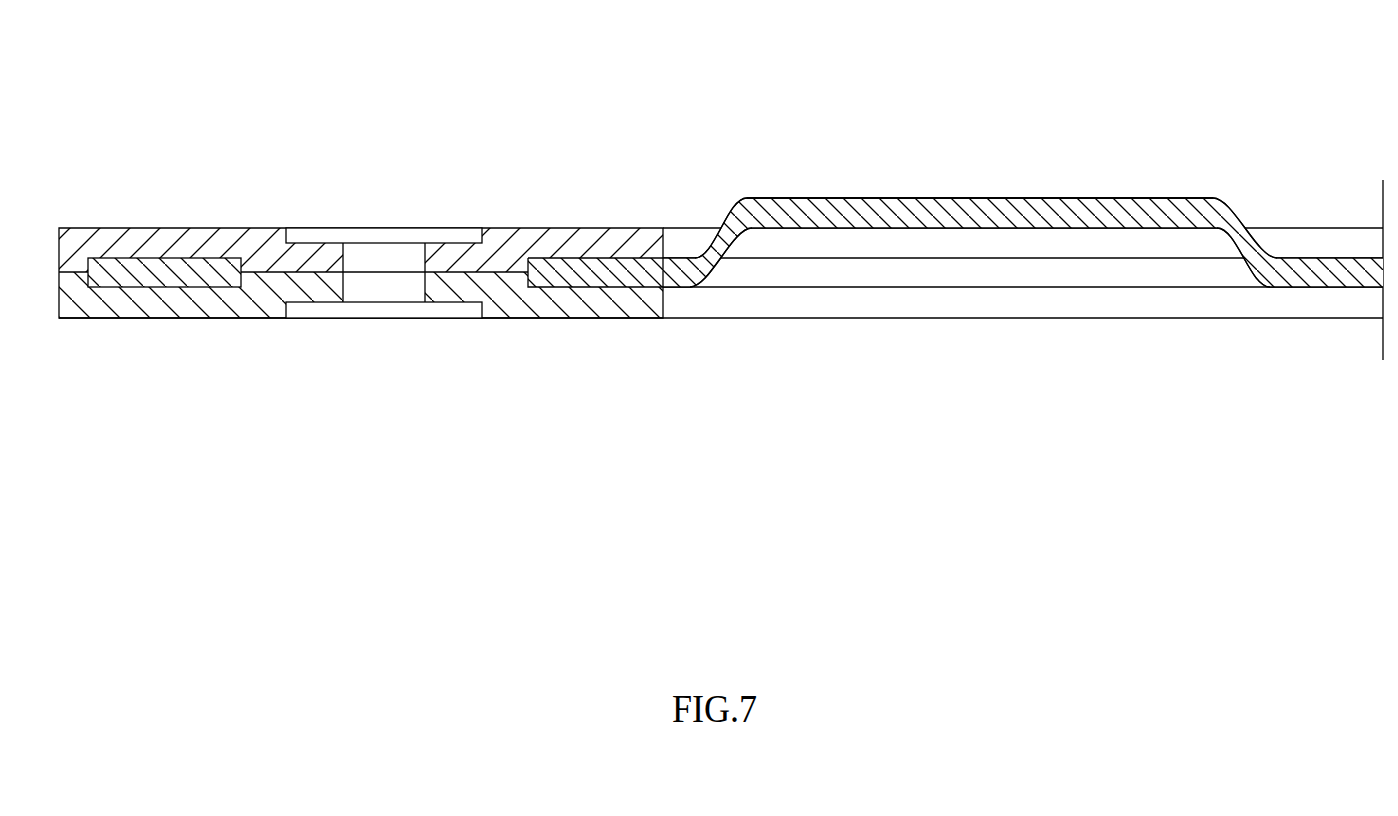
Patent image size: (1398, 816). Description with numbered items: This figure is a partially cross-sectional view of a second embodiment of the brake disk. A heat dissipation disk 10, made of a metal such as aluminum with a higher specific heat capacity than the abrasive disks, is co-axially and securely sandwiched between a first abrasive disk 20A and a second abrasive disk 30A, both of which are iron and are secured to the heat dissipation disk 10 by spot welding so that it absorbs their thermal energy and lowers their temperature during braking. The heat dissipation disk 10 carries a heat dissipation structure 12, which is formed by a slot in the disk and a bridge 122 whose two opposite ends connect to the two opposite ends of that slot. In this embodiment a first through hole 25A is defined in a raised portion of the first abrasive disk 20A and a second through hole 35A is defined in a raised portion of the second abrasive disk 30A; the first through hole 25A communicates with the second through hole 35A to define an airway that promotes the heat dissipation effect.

The heat dissipation disk 10 is at (598, 277).
The heat dissipation structure 12 is at (1002, 185).
The bridge 122 is at (1096, 207).
The second abrasive disk 30A is at (567, 213).
The second through hole 35A is at (392, 259).
The first through hole 25A is at (385, 288).
The first abrasive disk 20A is at (143, 320).